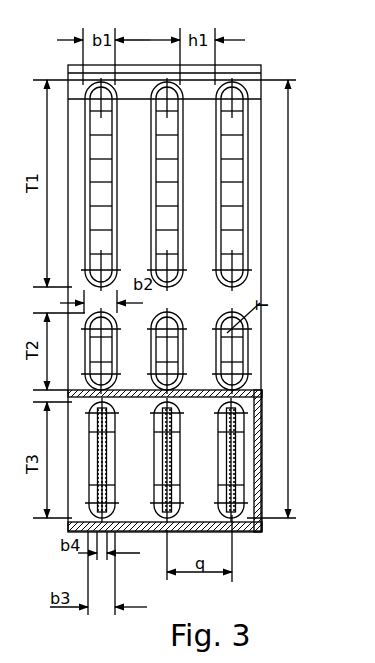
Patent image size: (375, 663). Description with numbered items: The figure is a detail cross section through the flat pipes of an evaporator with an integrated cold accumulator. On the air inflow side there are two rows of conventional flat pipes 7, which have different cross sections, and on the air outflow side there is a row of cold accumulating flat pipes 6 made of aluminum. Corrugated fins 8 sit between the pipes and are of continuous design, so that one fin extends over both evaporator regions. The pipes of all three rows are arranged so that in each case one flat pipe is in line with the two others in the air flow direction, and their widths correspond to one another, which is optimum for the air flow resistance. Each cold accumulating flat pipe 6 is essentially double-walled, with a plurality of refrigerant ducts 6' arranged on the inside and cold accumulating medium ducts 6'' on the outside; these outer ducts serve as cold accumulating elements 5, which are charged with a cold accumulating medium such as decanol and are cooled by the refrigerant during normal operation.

The cold accumulating element 5 is at (92, 485).
The cold accumulating flat pipe 6 is at (275, 460).
The refrigerant duct 6' is at (282, 460).
The cold accumulating medium duct 6'' is at (181, 485).
The flat pipe 7 is at (227, 178).
The corrugated fin 8 is at (200, 245).